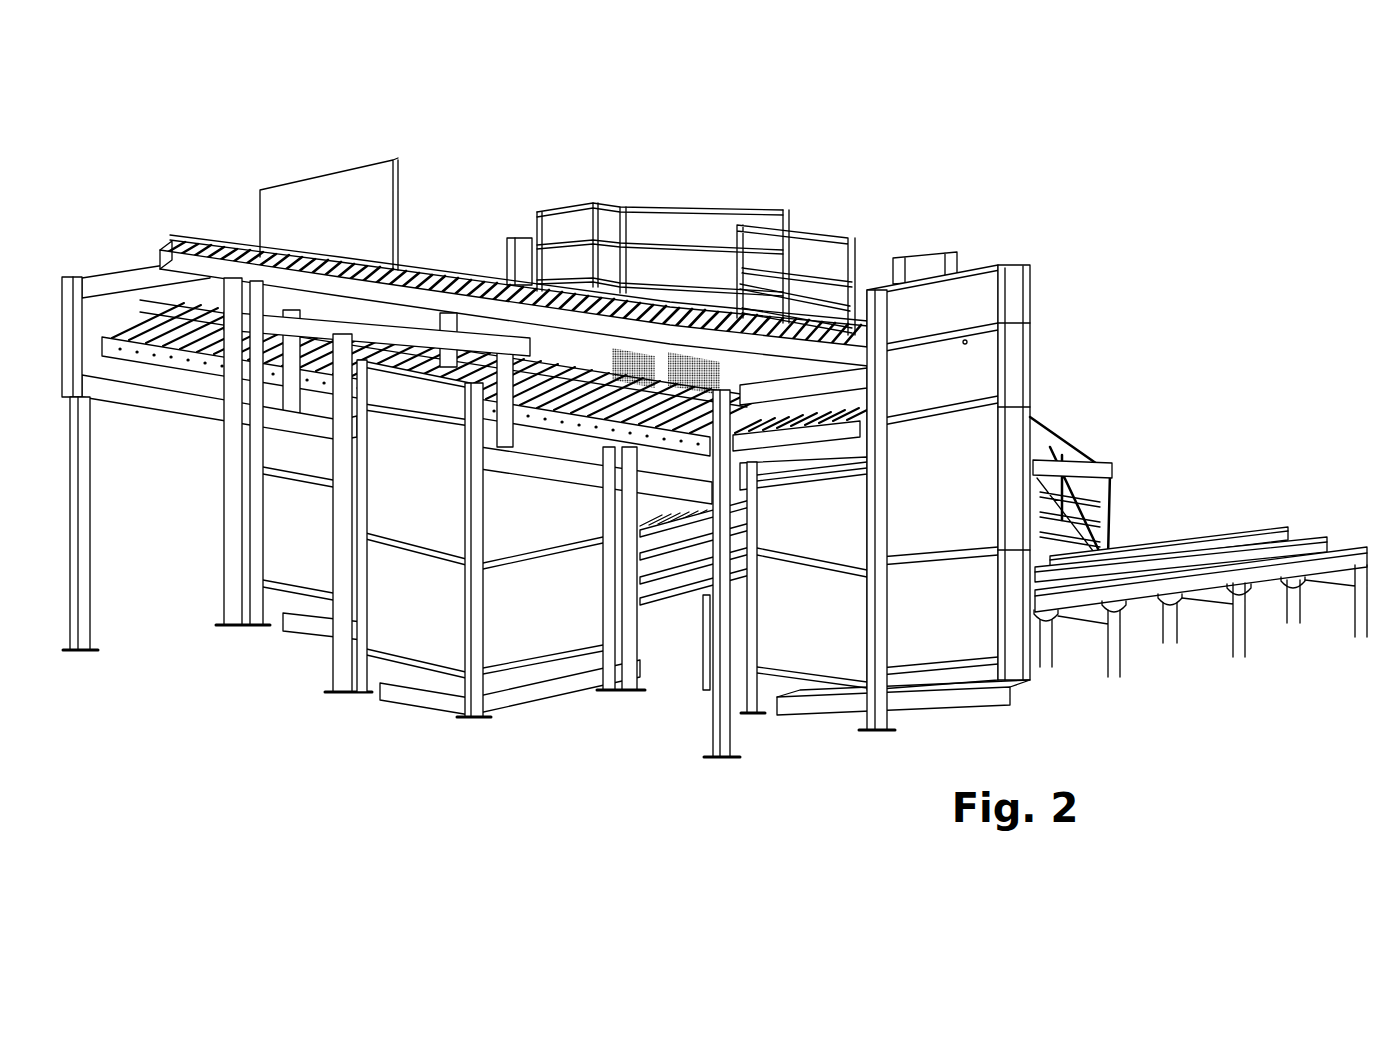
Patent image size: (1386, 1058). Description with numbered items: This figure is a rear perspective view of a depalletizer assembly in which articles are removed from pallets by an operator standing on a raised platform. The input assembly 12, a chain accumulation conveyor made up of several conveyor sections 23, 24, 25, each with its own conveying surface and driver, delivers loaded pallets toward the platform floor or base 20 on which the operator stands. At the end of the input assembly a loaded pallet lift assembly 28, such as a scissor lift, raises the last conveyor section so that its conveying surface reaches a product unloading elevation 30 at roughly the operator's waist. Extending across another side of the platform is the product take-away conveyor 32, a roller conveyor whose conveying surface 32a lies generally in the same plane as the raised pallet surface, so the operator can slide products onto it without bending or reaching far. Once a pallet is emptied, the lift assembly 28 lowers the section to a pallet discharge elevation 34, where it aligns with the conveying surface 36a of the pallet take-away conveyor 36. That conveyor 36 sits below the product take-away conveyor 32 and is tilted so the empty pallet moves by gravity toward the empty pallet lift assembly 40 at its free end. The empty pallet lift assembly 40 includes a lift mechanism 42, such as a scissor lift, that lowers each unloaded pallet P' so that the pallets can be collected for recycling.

The input assembly 12 is at (1208, 523).
The platform floor or base 20 is at (697, 380).
The conveyor section 23 is at (1267, 580).
The conveyor section 24 is at (1133, 610).
The conveyor section 25 is at (1088, 633).
The loaded pallet lift assembly 28 is at (830, 723).
The product unloading elevation 30 is at (323, 247).
The product take-away conveyor 32 is at (203, 236).
The conveying surface 32a is at (480, 270).
The pallet discharge elevation 34 is at (870, 345).
The pallet take-away conveyor 36 is at (650, 455).
The conveying surface 36a is at (633, 403).
The empty pallet lift assembly 40 is at (358, 713).
The lift mechanism 42 is at (412, 715).
The unloaded pallet P' is at (1118, 467).